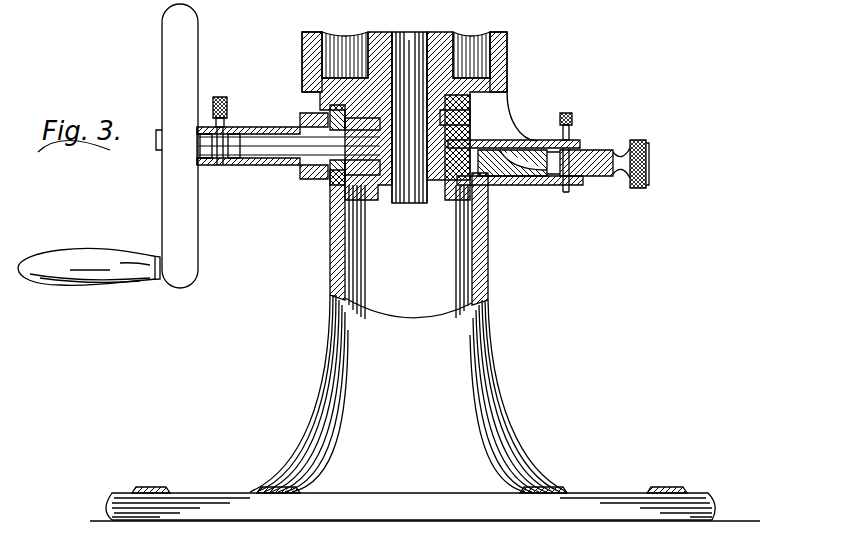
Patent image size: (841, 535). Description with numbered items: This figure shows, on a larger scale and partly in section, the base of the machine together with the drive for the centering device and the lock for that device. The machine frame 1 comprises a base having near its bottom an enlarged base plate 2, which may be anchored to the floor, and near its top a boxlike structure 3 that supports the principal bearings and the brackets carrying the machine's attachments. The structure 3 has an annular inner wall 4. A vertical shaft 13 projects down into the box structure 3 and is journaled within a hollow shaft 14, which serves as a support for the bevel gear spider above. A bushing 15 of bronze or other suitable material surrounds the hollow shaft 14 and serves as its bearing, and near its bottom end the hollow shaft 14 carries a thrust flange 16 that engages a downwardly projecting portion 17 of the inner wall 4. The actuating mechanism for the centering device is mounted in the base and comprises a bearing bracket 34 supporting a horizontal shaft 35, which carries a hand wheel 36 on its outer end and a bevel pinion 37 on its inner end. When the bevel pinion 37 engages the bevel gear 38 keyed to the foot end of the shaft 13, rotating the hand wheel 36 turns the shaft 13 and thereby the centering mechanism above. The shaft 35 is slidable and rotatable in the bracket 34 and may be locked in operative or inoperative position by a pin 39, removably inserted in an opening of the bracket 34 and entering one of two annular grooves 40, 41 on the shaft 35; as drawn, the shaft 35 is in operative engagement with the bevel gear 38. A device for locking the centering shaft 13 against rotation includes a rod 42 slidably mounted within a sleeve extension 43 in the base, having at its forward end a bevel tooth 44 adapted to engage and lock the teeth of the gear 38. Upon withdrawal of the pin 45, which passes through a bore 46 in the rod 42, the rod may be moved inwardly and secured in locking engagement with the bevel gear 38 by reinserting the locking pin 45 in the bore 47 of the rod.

The machine frame 1 is at (288, 447).
The base plate 2 is at (181, 496).
The boxlike structure 3 is at (506, 62).
The annular inner wall 4 is at (404, 46).
The vertical shaft 13 is at (410, 203).
The hollow shaft 14 is at (462, 32).
The bushing 15 is at (406, 39).
The thrust flange 16 is at (450, 122).
The downwardly projecting portion 17 is at (478, 98).
The bearing bracket 34 is at (280, 116).
The horizontal shaft 35 is at (280, 163).
The hand wheel 36 is at (198, 273).
The bevel pinion 37 is at (310, 183).
The bevel gear 38 is at (330, 247).
The pin 39 is at (226, 101).
The annular groove 40 is at (218, 165).
The annular groove 41 is at (245, 165).
The rod 42 is at (531, 190).
The sleeve extension 43 is at (548, 186).
The bevel tooth 44 is at (490, 203).
The pin 45 is at (572, 130).
The bore 46 is at (582, 178).
The bore 47 is at (587, 153).